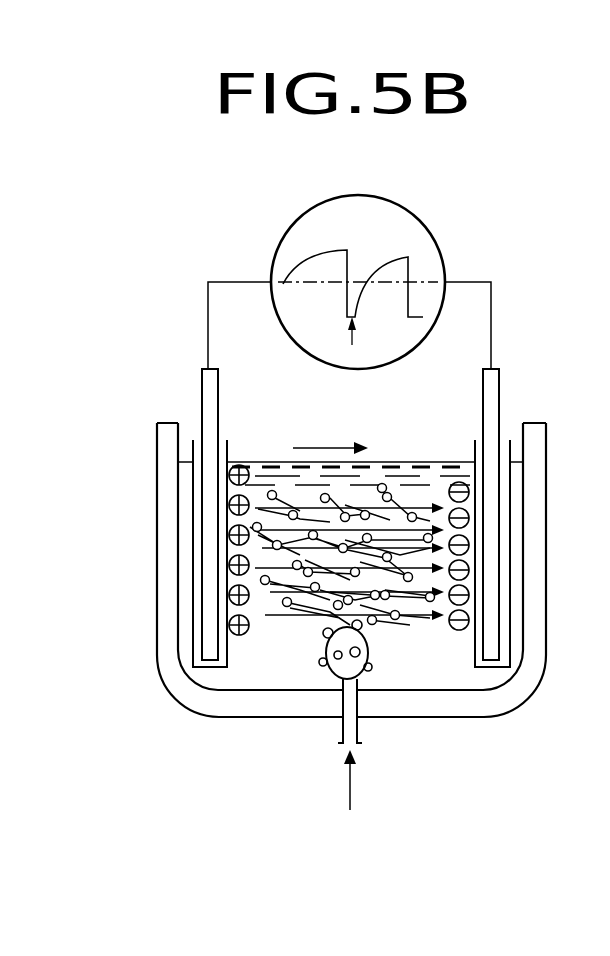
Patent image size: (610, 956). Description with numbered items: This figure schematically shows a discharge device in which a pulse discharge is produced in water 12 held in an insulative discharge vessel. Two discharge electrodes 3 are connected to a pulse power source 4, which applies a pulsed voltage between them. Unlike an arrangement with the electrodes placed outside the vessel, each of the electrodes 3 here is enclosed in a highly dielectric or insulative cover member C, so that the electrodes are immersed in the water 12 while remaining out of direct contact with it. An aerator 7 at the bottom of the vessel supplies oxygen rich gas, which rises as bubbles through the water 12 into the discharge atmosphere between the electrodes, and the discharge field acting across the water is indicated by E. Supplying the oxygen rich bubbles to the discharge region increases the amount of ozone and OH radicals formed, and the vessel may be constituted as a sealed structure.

The discharge electrodes 3 is at (212, 392).
The pulse power source 4 is at (442, 247).
The cover member C is at (196, 537).
The water 12 is at (427, 488).
The electric field E is at (333, 409).
The aerator 7 is at (352, 668).